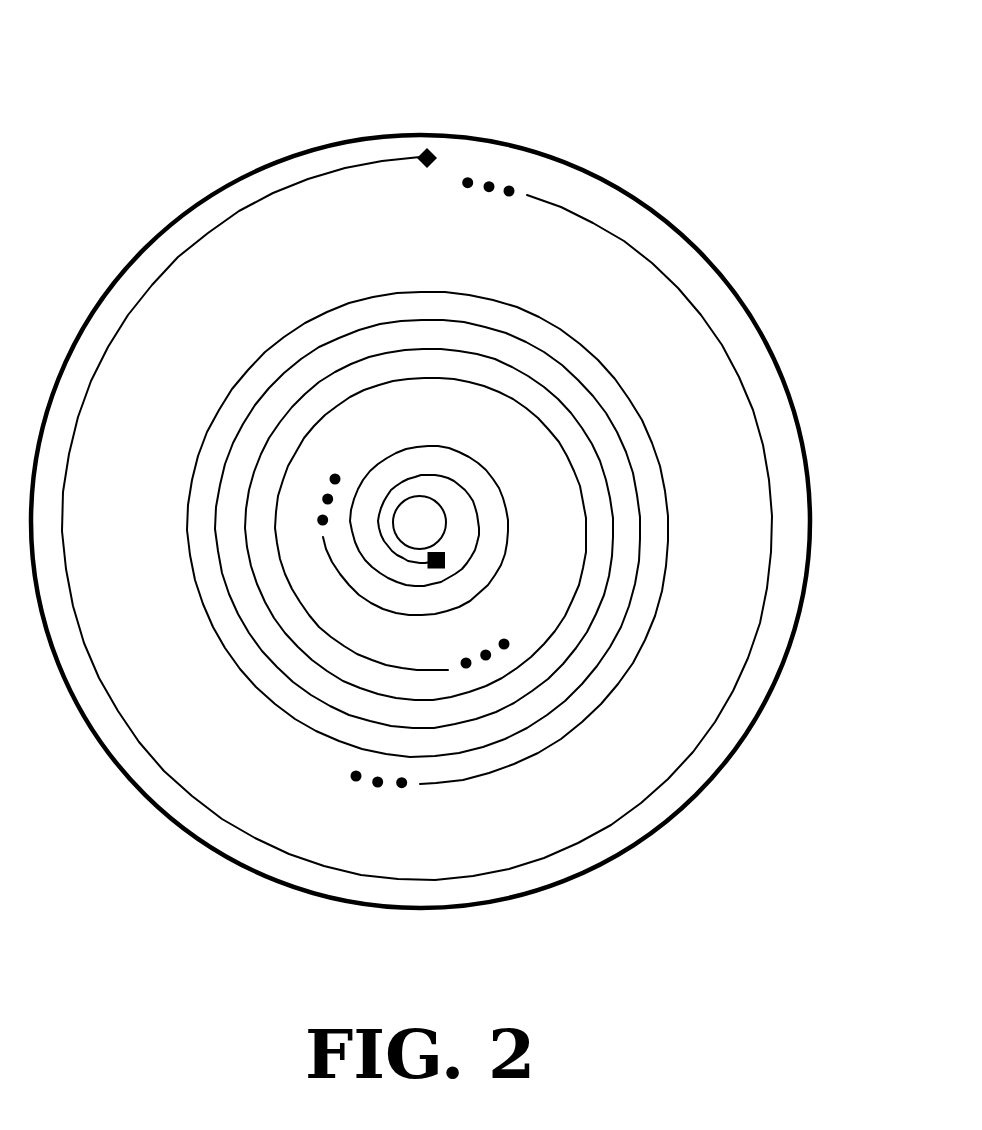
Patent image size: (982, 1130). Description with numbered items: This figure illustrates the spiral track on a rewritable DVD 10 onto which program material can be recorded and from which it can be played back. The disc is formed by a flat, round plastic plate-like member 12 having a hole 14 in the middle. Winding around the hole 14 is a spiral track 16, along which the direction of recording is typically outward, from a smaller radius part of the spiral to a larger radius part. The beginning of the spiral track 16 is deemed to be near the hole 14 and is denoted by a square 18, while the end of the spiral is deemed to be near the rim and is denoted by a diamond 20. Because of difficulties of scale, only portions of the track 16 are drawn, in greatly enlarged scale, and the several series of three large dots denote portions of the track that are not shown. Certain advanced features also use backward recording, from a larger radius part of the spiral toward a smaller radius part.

The rewritable DVD 10 is at (438, 34).
The plastic plate-like member 12 is at (523, 146).
The hole 14 is at (443, 535).
The spiral track 16 is at (493, 479).
The square 18 is at (441, 562).
The diamond 20 is at (420, 154).